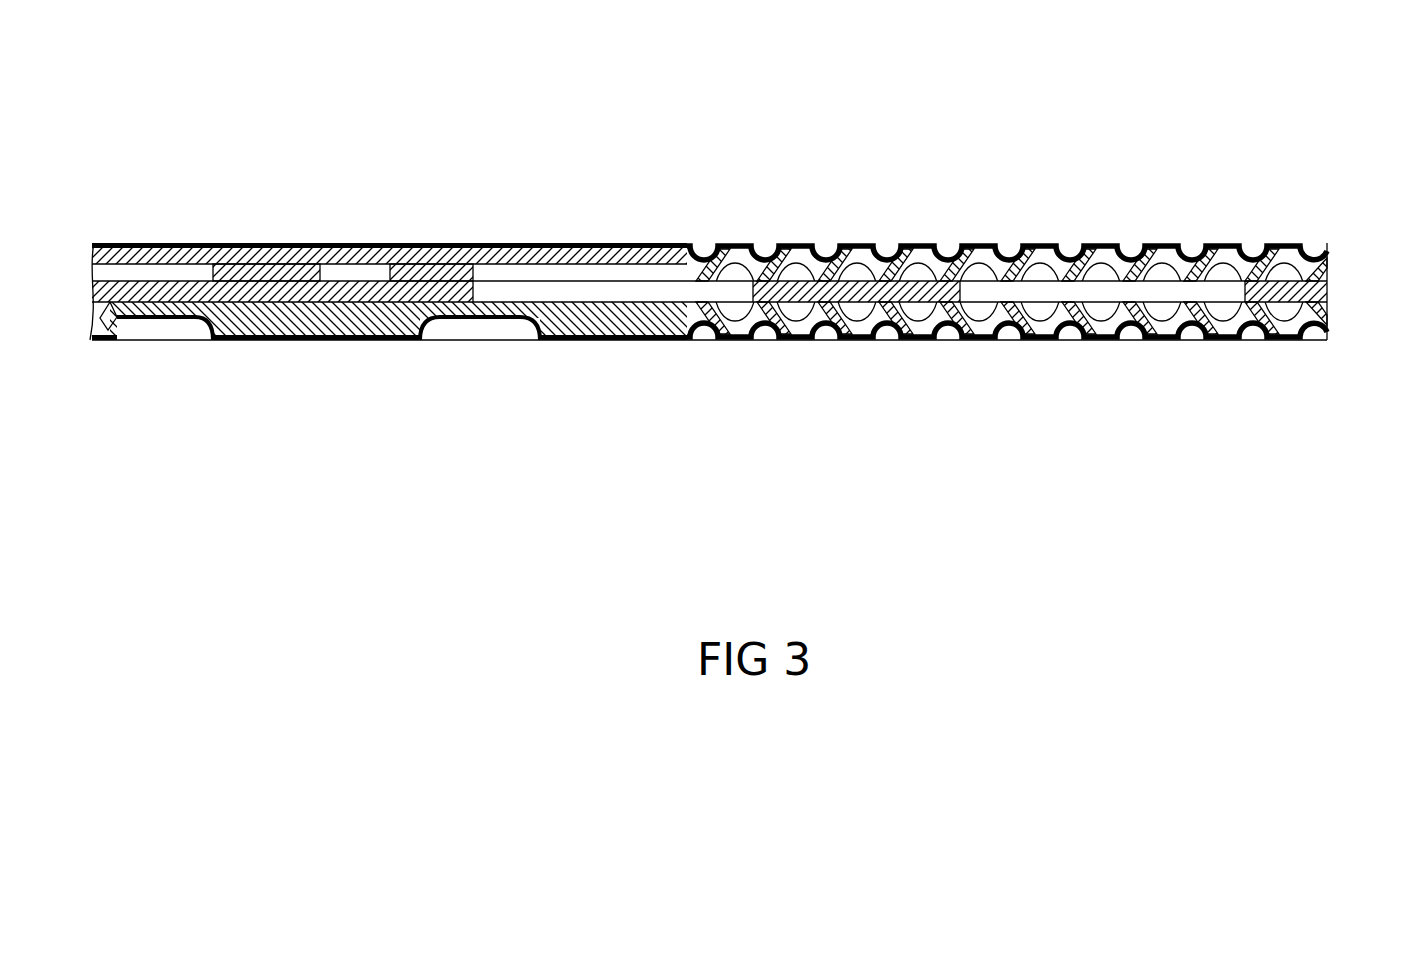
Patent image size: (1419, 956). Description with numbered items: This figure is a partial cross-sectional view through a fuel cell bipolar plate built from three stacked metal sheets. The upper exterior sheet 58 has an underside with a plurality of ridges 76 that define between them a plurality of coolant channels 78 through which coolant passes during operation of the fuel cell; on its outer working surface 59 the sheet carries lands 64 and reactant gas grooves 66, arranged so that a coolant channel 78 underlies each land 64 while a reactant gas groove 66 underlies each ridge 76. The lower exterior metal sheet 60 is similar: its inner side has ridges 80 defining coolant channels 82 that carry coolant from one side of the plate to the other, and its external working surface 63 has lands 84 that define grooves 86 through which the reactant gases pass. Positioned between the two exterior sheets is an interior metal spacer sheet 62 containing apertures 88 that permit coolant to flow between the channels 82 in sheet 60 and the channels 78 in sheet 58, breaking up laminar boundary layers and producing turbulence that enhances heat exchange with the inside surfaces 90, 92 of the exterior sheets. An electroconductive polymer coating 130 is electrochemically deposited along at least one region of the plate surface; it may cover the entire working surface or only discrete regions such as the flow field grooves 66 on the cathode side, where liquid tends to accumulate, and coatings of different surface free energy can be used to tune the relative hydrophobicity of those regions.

The sheet 58 is at (153, 243).
The electroconductive polymer coating 130 is at (288, 243).
The inside surface 90 is at (522, 264).
The working surface 59 is at (633, 243).
The ridges 76 is at (690, 262).
The lands 64 is at (730, 245).
The reactant gas grooves 66 is at (762, 248).
The coolant channels 78 is at (857, 275).
The apertures 88 is at (1033, 293).
The interior metal spacer sheet 62 is at (1327, 293).
The metal sheet 60 is at (305, 342).
The inside surface 92 is at (613, 313).
The working surface 63 is at (580, 345).
The ridges 80 is at (703, 342).
The channels 82 is at (775, 340).
The lands 84 is at (852, 340).
The grooves 86 is at (945, 340).